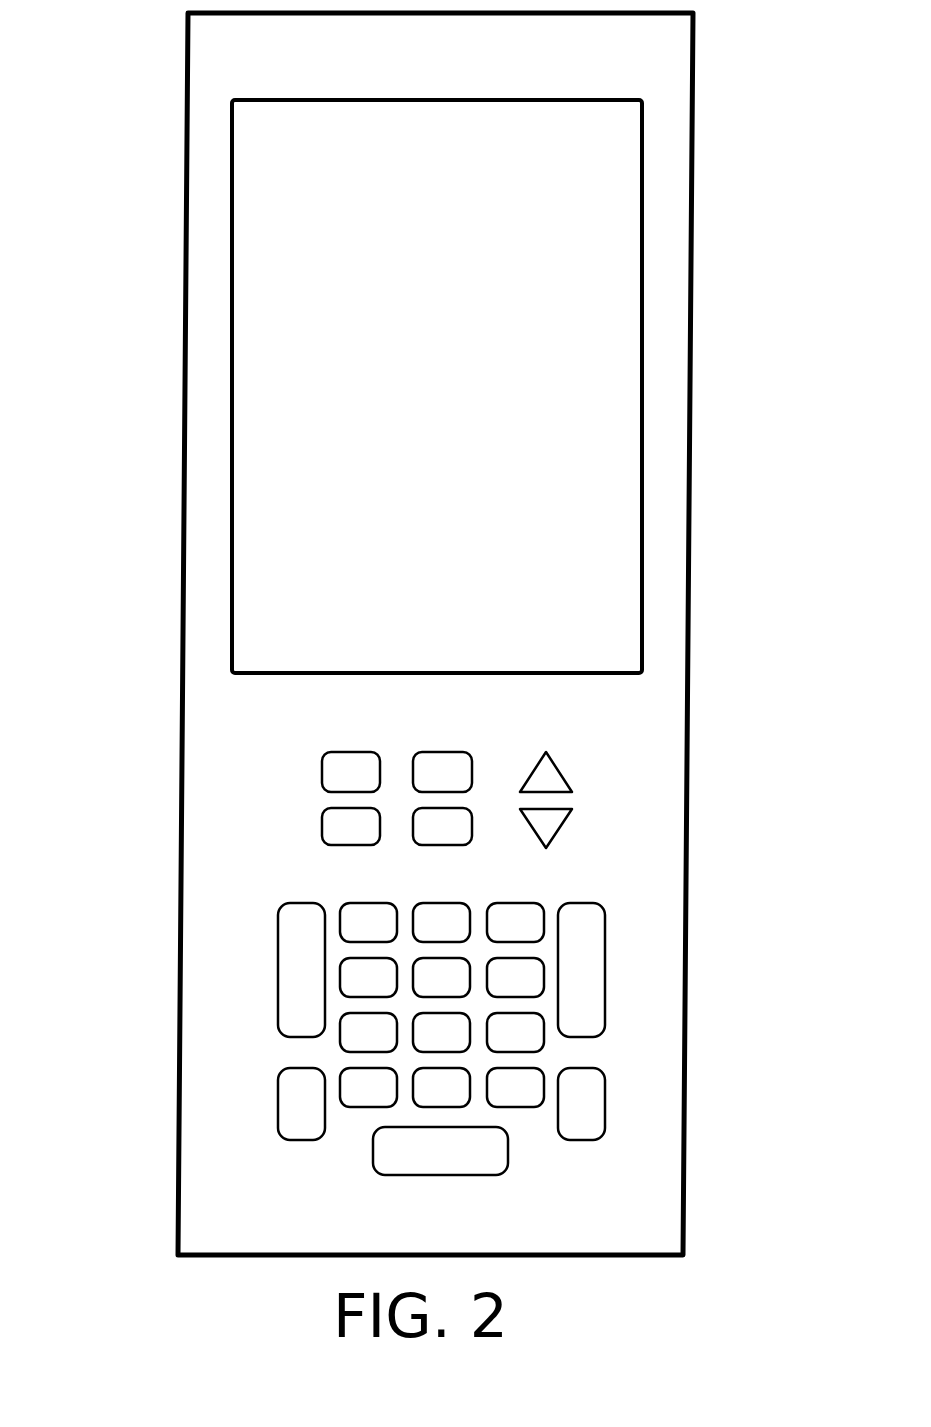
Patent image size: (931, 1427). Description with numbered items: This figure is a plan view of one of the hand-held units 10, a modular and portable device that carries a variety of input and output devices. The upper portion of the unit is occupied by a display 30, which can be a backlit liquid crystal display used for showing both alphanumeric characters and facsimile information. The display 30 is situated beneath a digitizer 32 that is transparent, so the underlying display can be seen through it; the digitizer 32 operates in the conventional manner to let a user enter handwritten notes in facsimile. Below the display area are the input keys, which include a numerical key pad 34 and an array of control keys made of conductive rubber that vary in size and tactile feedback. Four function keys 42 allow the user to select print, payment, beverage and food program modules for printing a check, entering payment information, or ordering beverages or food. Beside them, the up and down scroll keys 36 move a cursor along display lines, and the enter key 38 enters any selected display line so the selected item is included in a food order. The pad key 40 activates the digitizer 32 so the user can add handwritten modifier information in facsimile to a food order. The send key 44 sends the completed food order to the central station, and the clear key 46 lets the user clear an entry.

The hand-held unit 10 is at (703, 1227).
The display 30 is at (510, 386).
The digitizer 32 is at (490, 338).
The numerical key pad 34 is at (571, 1055).
The scroll keys 36 is at (598, 828).
The enter key 38 is at (626, 983).
The pad key 40 is at (626, 1113).
The function keys 42 is at (294, 808).
The send key 44 is at (257, 978).
The clear key 46 is at (257, 1108).